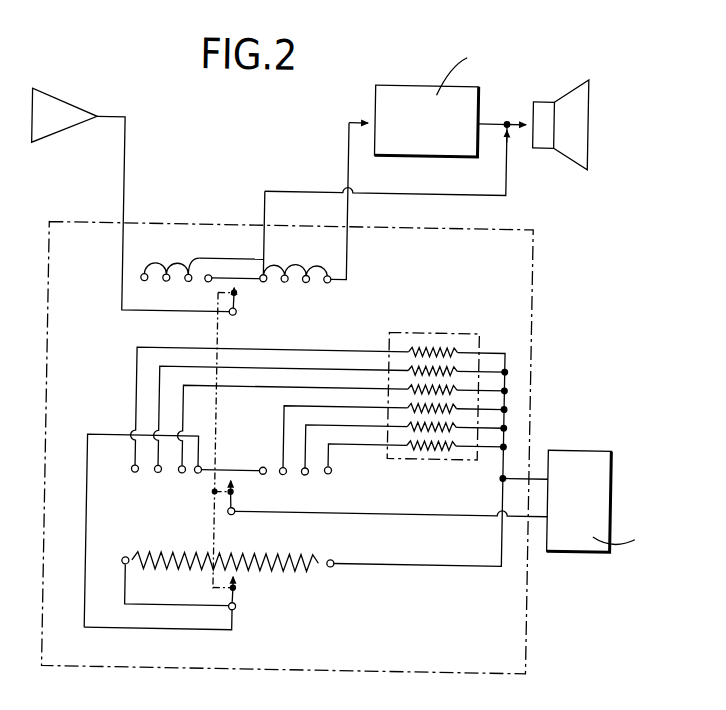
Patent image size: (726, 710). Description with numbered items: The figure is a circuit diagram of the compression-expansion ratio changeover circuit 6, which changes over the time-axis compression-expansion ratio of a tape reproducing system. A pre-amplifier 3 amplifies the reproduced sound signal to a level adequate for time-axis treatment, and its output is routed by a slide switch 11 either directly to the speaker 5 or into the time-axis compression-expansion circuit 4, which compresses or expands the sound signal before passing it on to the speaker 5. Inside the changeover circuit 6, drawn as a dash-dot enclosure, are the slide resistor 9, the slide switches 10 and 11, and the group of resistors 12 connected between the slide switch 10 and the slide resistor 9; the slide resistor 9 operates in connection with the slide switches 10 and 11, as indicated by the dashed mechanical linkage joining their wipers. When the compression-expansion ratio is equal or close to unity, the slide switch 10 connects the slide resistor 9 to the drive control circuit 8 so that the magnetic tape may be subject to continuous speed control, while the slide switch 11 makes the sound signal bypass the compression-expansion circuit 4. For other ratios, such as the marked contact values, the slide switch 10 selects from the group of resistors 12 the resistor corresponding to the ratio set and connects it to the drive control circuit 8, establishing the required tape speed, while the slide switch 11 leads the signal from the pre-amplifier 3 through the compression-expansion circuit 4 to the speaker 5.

The pre-amplifier 3 is at (62, 103).
The time-axis compression-expansion circuit 4 is at (416, 85).
The speaker 5 is at (584, 135).
The compression-expansion ratio changeover circuit 6 is at (533, 280).
The drive control circuit 8 is at (573, 447).
The slide resistor 9 is at (264, 569).
The slide switch 10 is at (335, 476).
The slide switch 11 is at (311, 283).
The group of resistors 12 is at (428, 332).